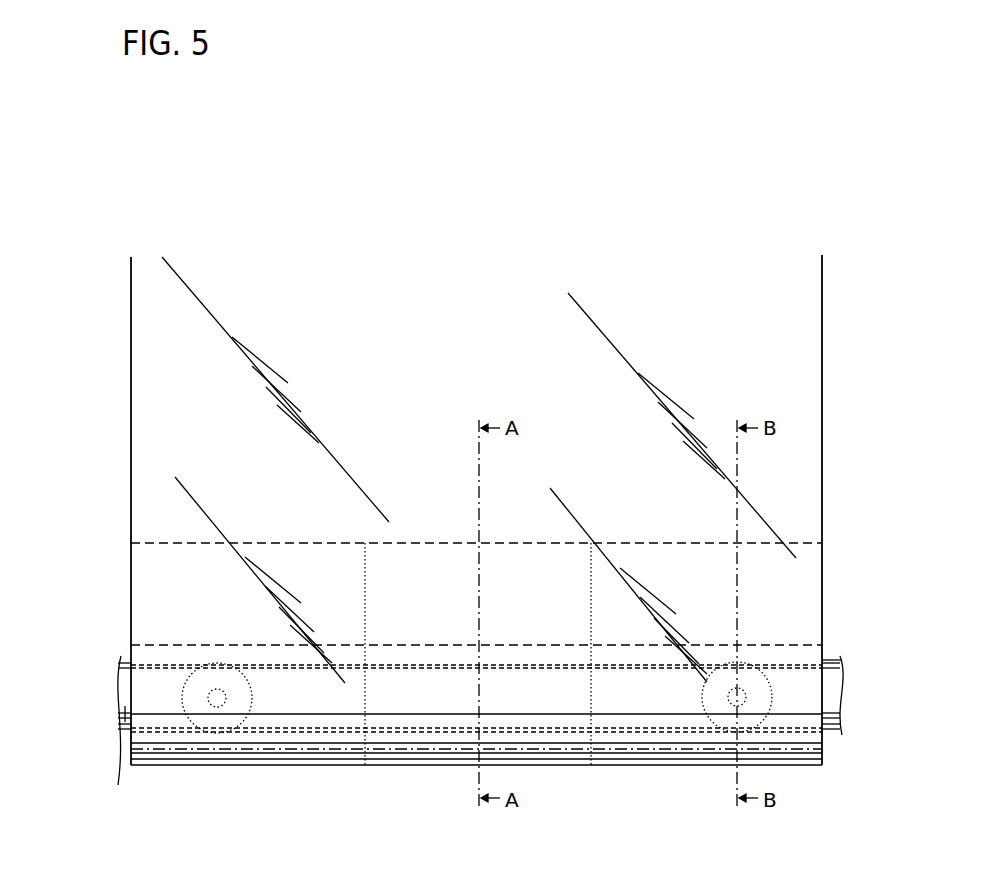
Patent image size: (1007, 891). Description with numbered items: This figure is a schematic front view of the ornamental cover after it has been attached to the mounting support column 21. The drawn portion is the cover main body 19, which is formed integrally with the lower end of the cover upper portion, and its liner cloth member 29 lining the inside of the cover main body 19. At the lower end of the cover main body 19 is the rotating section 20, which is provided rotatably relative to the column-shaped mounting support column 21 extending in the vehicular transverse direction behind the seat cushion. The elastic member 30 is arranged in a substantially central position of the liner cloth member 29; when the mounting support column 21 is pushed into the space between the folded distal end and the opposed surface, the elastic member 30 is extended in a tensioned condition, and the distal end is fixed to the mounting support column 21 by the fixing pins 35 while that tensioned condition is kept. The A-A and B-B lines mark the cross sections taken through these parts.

The cover main body 19 is at (731, 361).
The rotating section 20 is at (119, 630).
The mounting support column 21 is at (135, 731).
The liner cloth member 29 is at (770, 626).
The elastic member 30 is at (549, 583).
The fixing pins 35 is at (220, 707).